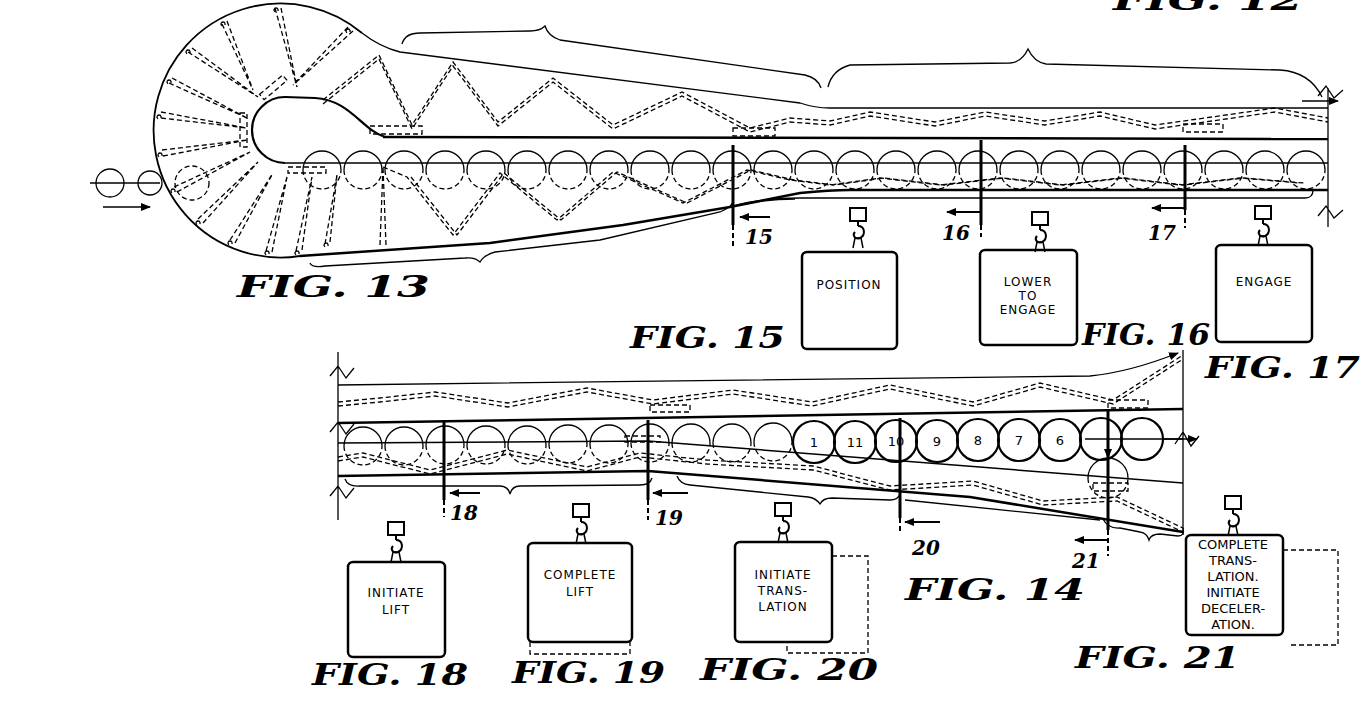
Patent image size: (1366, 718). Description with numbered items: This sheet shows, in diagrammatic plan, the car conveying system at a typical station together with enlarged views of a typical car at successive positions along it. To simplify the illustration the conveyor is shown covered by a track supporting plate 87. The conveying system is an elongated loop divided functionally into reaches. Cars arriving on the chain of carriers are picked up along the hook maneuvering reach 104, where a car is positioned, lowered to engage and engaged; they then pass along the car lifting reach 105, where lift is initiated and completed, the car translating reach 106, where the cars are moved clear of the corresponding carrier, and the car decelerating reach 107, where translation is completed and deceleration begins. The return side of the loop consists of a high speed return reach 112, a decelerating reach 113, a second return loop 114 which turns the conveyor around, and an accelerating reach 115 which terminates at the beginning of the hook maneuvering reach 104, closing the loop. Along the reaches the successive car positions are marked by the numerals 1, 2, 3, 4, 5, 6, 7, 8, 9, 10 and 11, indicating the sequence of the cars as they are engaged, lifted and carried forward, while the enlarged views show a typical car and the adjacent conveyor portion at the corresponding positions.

In FIG. 13, the article station 1 is at (443, 152).
In FIG. 14, the article station 1 is at (365, 421).
In FIG. 13, the article station 2 is at (402, 152).
In FIG. 13, the article station 3 is at (363, 152).
In FIG. 13, the article station 4 is at (327, 152).
In FIG. 13, the article station 5 is at (724, 152).
In FIG. 14, the article station 5 is at (651, 421).
In FIG. 13, the article station 6 is at (686, 152).
In FIG. 14, the article station 6 is at (610, 421).
In FIG. 13, the article station 7 is at (645, 152).
In FIG. 14, the article station 7 is at (569, 421).
In FIG. 13, the article station 8 is at (601, 152).
In FIG. 14, the article station 8 is at (528, 421).
In FIG. 13, the article station 9 is at (562, 152).
In FIG. 14, the article station 9 is at (487, 421).
In FIG. 13, the article station 10 is at (522, 152).
In FIG. 14, the article station 10 is at (446, 421).
In FIG. 13, the article station 11 is at (481, 152).
In FIG. 14, the article station 11 is at (405, 421).
In FIG. 13, the track supporting plate 87 is at (163, 101).
In FIG. 13, the hook maneuvering reach 104 is at (784, 212).
In FIG. 14, the car lifting reach 105 is at (498, 496).
In FIG. 14, the car translating reach 106 is at (788, 500).
In FIG. 14, the car decelerating reach 107 is at (1143, 540).
In FIG. 13, the high speed return reach 112 is at (1075, 64).
In FIG. 13, the decelerating reach 113 is at (611, 50).
In FIG. 13, the second return loop 114 is at (182, 63).
In FIG. 13, the accelerating reach 115 is at (521, 241).